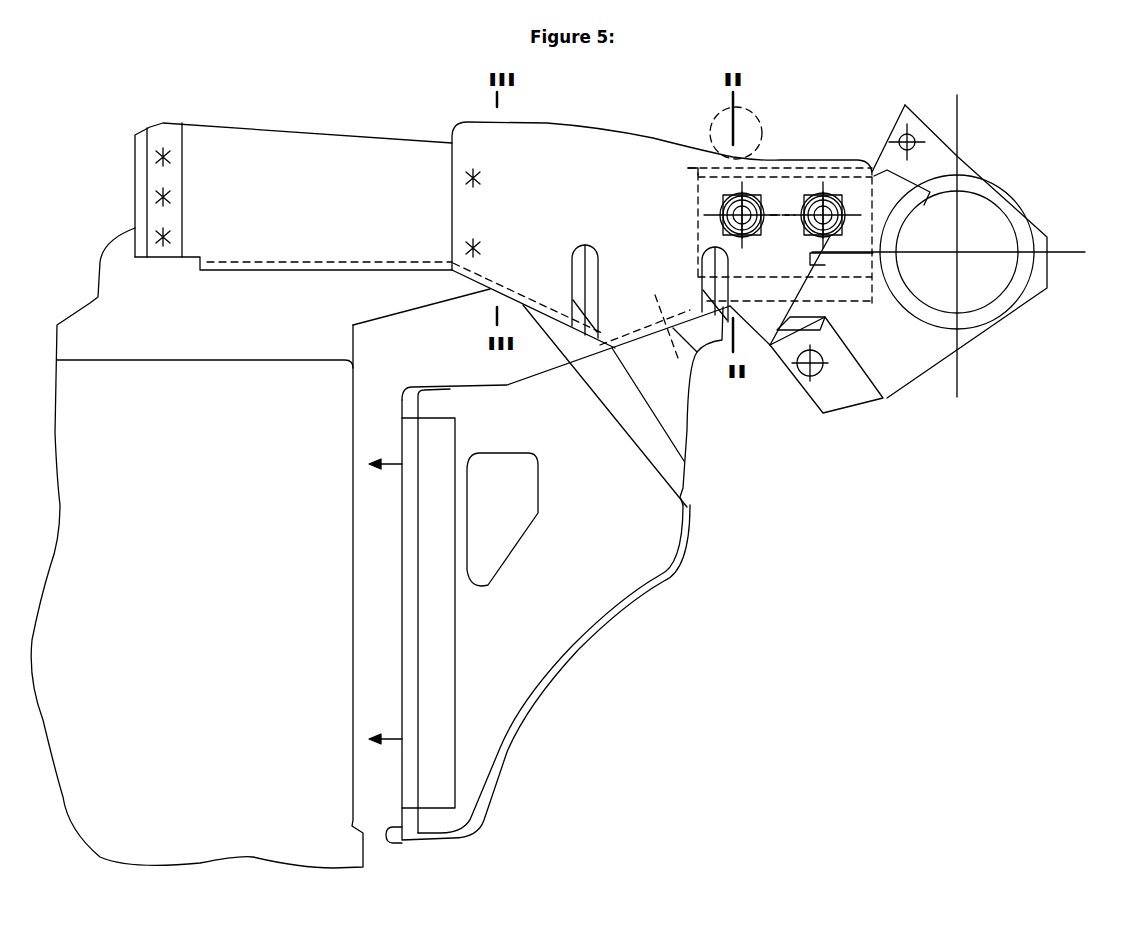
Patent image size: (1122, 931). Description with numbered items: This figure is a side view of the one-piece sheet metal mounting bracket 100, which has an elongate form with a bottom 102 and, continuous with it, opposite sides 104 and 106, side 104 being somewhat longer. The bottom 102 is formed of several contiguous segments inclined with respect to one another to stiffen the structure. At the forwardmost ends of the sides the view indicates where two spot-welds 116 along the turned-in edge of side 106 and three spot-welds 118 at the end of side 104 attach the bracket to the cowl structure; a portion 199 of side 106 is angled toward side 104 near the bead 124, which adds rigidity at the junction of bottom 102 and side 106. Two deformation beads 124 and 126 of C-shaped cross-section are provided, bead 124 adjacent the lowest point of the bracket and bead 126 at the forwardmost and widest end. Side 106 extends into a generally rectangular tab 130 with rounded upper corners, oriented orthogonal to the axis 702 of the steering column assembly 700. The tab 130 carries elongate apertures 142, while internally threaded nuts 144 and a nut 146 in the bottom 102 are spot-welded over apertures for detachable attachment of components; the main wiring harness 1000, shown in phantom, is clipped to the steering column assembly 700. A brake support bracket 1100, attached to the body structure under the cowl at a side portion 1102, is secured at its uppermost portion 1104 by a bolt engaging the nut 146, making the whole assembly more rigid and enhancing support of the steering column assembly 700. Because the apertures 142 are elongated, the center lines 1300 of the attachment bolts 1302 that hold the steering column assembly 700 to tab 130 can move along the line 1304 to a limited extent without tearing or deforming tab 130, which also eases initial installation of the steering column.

The mounting bracket 100 is at (384, 127).
The bottom 102 is at (690, 513).
The side 104 is at (273, 142).
The side 106 is at (640, 233).
The spot-welds 116 is at (468, 242).
The spot-welds 118 is at (155, 233).
The deformation bead 124 is at (690, 475).
The deformation bead 126 is at (782, 370).
The tab 130 is at (837, 165).
The elongate apertures 142 is at (758, 200).
The internally threaded nuts 144 is at (832, 225).
The nut 146 is at (697, 352).
The portion of side 199 is at (522, 175).
The steering column assembly 700 is at (978, 185).
The axis 702 is at (958, 252).
The main wiring harness 1000 is at (782, 93).
The brake support bracket 1100 is at (687, 543).
The side portion 1102 is at (403, 843).
The uppermost portion 1104 is at (688, 412).
The center lines 1300 is at (725, 207).
The attachment bolts 1302 is at (733, 197).
The line 1304 is at (780, 213).